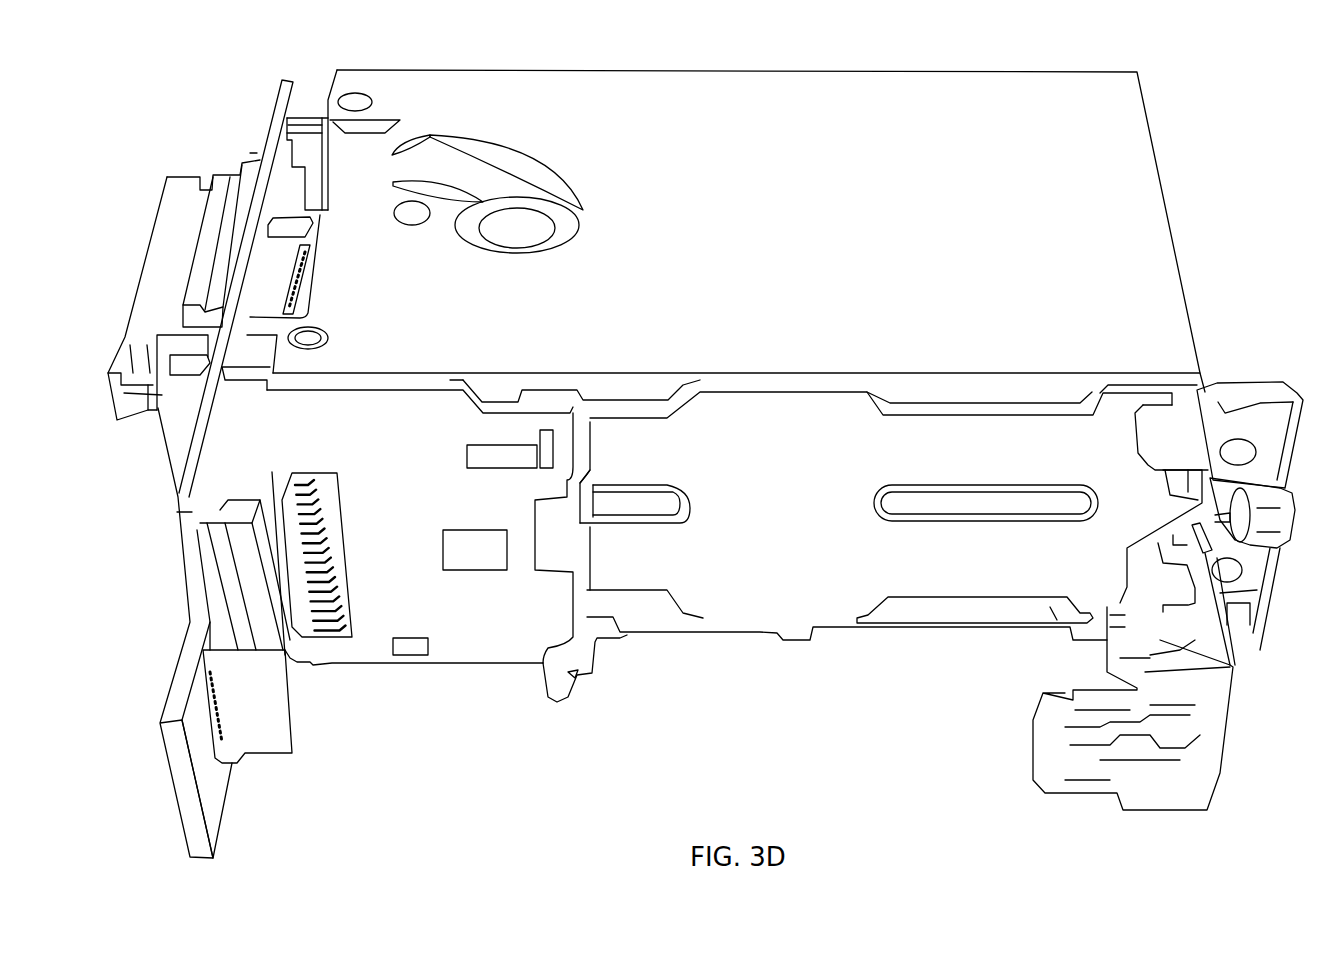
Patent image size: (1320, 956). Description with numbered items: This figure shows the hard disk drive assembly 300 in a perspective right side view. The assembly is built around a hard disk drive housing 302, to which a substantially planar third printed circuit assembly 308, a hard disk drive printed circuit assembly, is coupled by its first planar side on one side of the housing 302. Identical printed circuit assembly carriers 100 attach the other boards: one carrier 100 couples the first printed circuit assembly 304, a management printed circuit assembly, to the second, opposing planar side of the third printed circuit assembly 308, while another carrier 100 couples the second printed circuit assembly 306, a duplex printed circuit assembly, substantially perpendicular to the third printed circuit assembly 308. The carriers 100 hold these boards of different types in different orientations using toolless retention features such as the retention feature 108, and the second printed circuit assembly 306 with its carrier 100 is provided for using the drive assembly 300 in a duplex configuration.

The printed circuit assembly carrier 100 is at (160, 243).
The toolless retention feature 108 is at (562, 690).
The hard disk drive assembly 300 is at (1213, 124).
The hard disk drive housing 302 is at (833, 85).
The first printed circuit assembly 304 is at (163, 438).
The second printed circuit assembly 306 is at (470, 650).
The third printed circuit assembly 308 is at (182, 557).